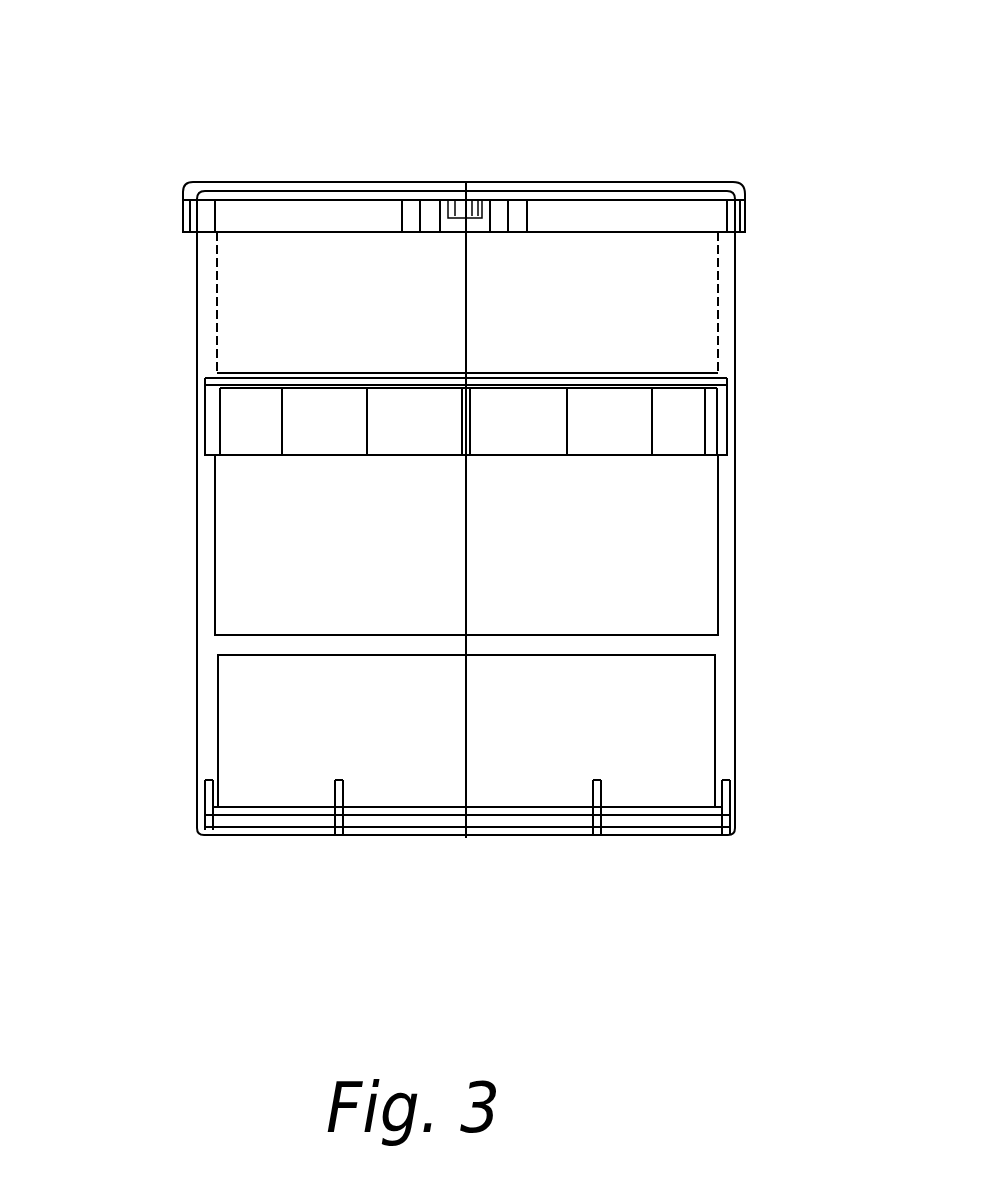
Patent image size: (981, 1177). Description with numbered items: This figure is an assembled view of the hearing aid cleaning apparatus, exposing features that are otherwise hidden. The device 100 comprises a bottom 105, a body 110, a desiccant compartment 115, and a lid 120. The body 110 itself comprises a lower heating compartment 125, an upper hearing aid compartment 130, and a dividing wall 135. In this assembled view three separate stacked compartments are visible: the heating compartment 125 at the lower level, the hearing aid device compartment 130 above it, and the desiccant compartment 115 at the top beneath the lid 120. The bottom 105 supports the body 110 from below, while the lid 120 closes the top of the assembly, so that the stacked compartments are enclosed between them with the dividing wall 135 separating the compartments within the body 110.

The storage system 100 is at (188, 62).
The base 105 is at (258, 836).
The housing 110 is at (196, 572).
The upper compartment 115 is at (695, 320).
The lid 120 is at (680, 182).
The lower compartment 125 is at (710, 758).
The middle compartment 130 is at (718, 553).
The shelf 135 is at (697, 650).